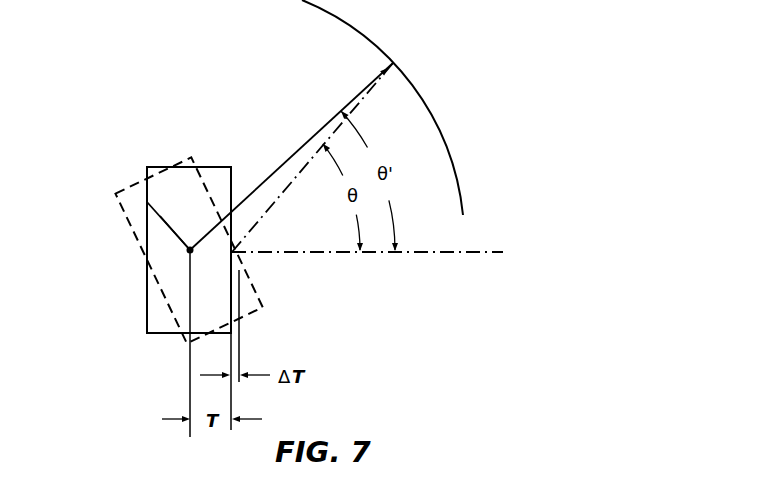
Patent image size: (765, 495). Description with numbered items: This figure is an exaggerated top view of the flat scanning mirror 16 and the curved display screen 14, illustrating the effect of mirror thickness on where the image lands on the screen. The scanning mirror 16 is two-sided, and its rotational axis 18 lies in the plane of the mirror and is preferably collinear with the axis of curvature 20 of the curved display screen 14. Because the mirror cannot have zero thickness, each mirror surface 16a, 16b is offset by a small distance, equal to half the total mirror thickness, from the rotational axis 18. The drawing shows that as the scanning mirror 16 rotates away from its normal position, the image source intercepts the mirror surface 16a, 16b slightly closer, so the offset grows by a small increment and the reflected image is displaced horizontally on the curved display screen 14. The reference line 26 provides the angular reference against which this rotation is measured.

The curved display screen 14 is at (422, 97).
The scanning mirror 16 is at (145, 311).
The mirror surface 16a is at (147, 274).
The mirror surface 16b is at (231, 176).
The rotational axis 18 is at (147, 202).
The axis of curvature 20 is at (177, 235).
The optical axis 26 is at (458, 253).